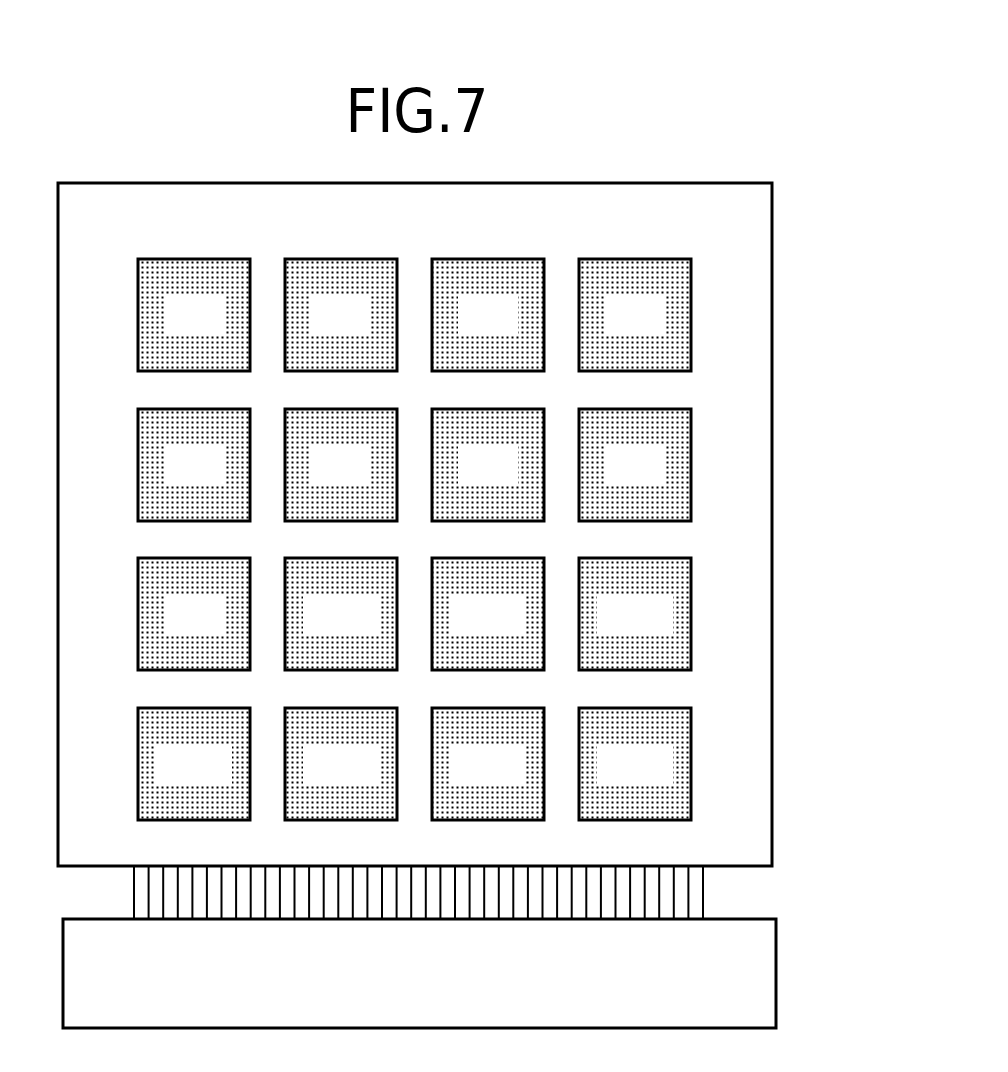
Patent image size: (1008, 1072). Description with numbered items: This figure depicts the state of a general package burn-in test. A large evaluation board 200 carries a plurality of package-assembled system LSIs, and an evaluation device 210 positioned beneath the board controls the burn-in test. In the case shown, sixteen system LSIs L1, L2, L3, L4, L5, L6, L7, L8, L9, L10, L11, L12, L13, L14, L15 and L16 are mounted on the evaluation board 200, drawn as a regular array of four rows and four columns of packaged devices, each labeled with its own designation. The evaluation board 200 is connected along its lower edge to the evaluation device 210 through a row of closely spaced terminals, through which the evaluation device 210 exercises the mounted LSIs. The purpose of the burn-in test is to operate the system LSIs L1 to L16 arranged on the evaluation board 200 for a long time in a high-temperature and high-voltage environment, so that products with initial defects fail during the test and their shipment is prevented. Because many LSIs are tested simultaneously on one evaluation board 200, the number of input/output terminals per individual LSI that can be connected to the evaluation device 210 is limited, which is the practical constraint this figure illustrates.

The evaluation board 200 is at (773, 808).
The evaluation device 210 is at (777, 973).
The system LSI L1 is at (194, 315).
The system LSI L2 is at (341, 315).
The system LSI L3 is at (488, 315).
The system LSI L4 is at (635, 315).
The system LSI L5 is at (194, 465).
The system LSI L6 is at (341, 465).
The system LSI L7 is at (488, 465).
The system LSI L8 is at (635, 465).
The system LSI L9 is at (194, 614).
The system LSI L10 is at (341, 614).
The system LSI L11 is at (488, 614).
The system LSI L12 is at (635, 614).
The system LSI L13 is at (194, 764).
The system LSI L14 is at (341, 764).
The system LSI L15 is at (488, 764).
The system LSI L16 is at (635, 764).